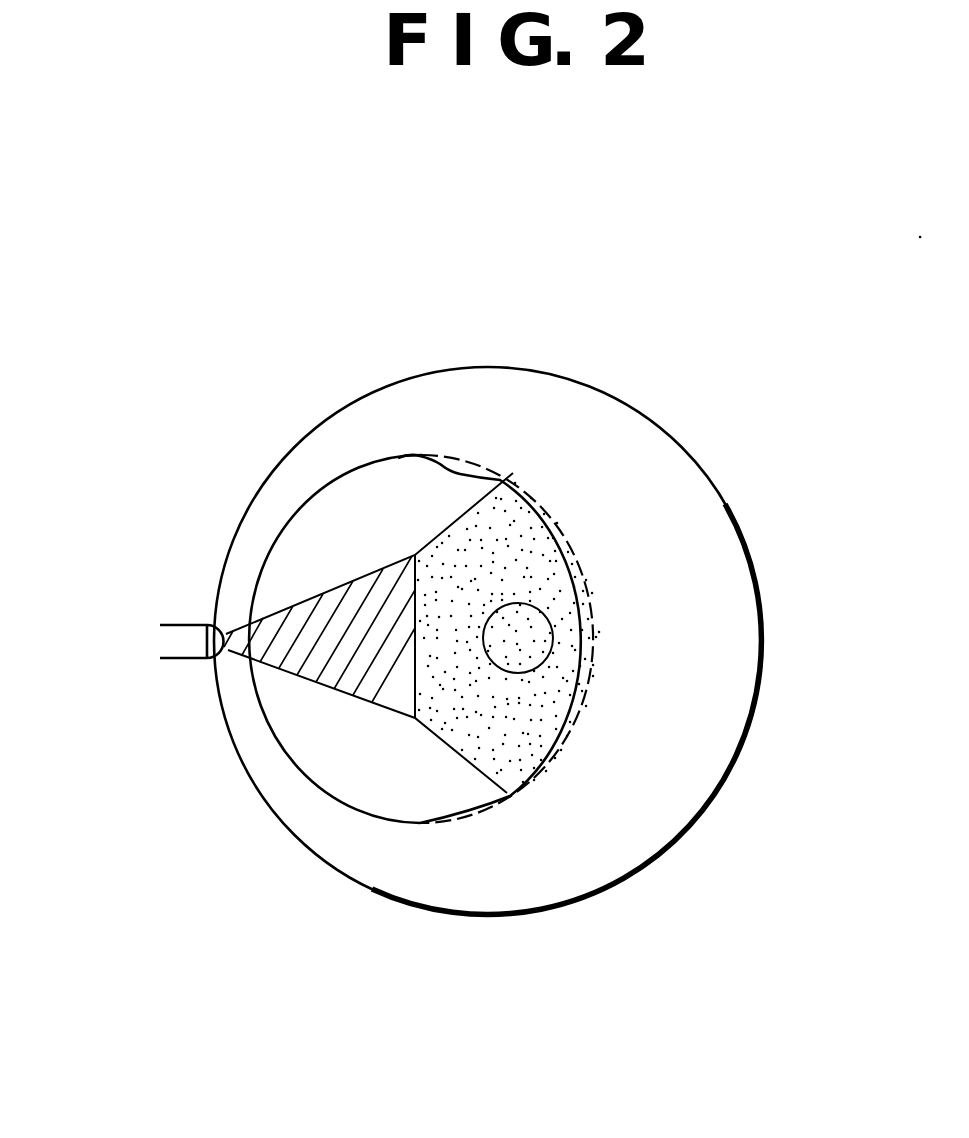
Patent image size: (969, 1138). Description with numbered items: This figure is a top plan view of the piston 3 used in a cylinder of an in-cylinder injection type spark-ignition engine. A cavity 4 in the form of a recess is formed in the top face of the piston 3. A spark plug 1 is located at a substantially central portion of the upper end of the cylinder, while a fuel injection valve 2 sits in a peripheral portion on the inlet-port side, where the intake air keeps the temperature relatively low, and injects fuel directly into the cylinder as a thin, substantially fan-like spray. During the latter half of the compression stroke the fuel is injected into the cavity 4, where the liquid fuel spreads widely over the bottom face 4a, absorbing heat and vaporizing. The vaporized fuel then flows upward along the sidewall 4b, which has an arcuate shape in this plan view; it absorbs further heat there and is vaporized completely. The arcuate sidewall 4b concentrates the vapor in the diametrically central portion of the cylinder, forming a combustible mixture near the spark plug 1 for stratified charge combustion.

The spark plug 1 is at (520, 672).
The fuel injection valve 2 is at (185, 643).
The piston 3 is at (688, 507).
The cavity 4 is at (307, 492).
The bottom face 4a is at (380, 500).
The sidewall 4b is at (584, 590).